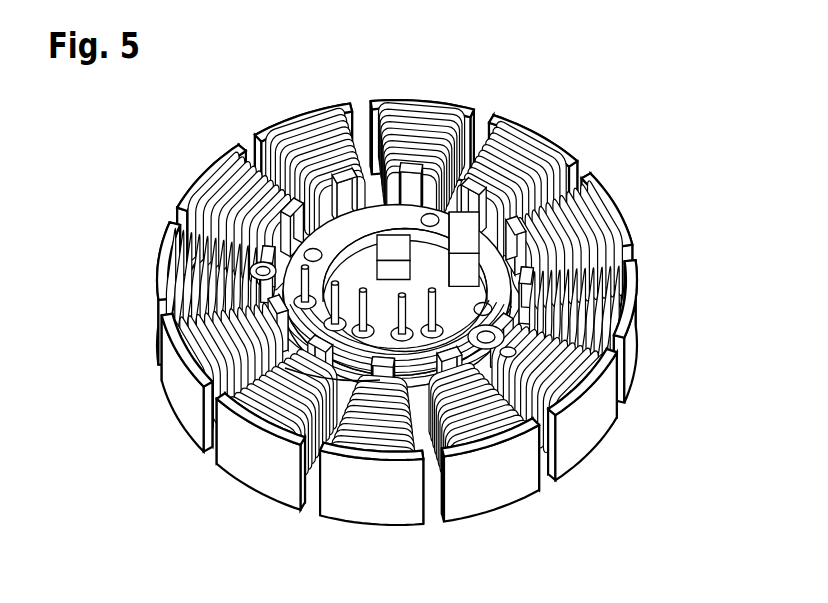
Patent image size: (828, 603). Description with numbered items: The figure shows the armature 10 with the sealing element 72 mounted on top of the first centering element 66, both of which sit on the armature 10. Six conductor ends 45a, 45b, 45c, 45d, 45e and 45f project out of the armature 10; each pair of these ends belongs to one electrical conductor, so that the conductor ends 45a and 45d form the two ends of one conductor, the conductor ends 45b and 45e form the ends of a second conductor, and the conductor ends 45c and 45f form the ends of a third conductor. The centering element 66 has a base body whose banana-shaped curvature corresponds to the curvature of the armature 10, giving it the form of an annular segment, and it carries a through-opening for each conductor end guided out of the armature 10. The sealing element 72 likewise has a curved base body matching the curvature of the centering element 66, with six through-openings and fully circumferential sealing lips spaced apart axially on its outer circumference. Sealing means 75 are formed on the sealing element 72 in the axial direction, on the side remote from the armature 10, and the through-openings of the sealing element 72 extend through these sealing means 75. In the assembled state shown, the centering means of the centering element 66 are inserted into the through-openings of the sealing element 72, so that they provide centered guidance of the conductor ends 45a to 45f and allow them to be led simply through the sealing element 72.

The armature 10 is at (605, 154).
The conductor end 45a is at (487, 350).
The conductor end 45b is at (372, 345).
The conductor end 45c is at (362, 345).
The conductor end 45d is at (327, 332).
The conductor end 45e is at (296, 318).
The conductor end 45f is at (250, 270).
The first centering element 66 is at (512, 354).
The sealing element 72 is at (432, 346).
The sealing means 75 is at (317, 352).